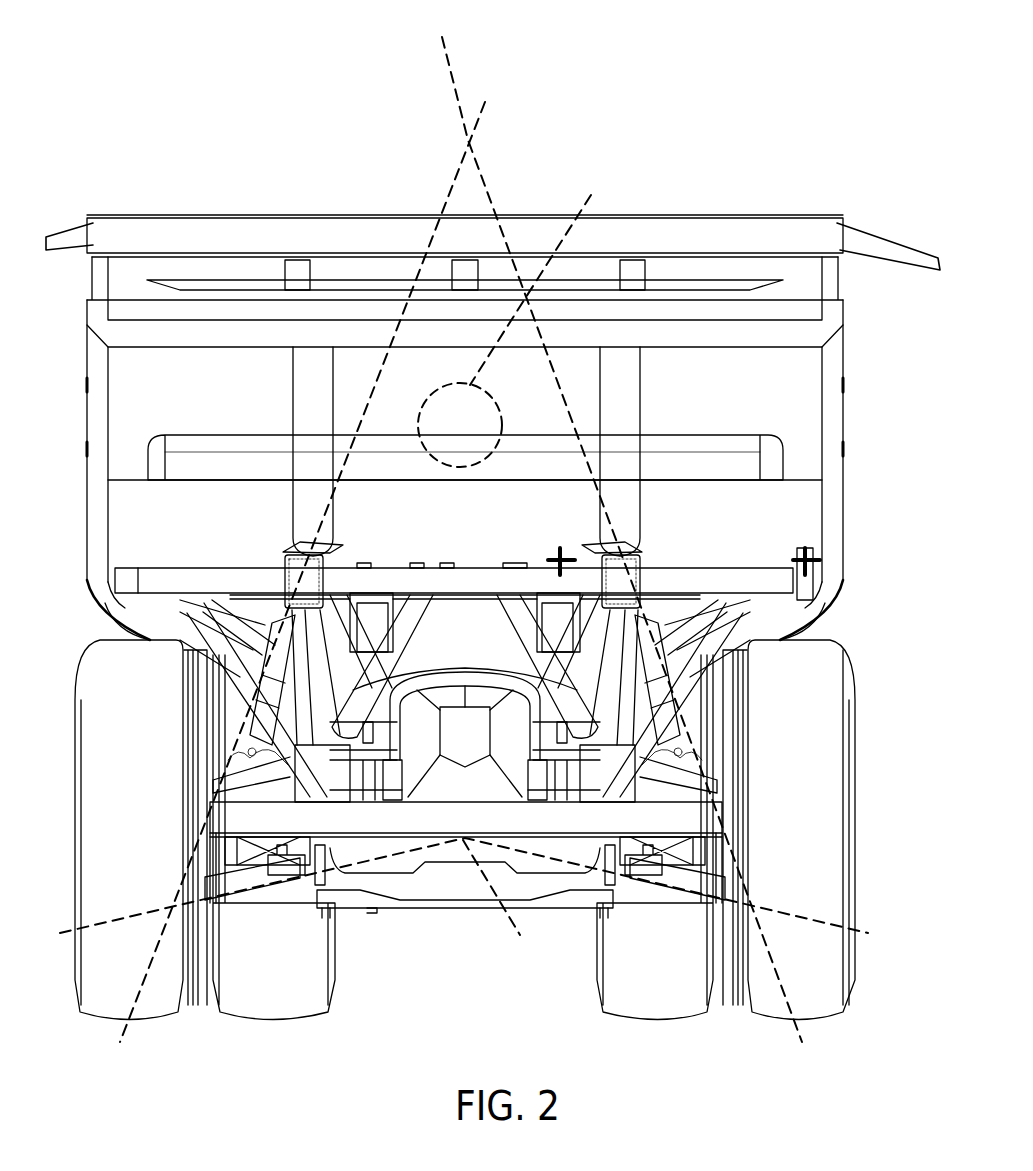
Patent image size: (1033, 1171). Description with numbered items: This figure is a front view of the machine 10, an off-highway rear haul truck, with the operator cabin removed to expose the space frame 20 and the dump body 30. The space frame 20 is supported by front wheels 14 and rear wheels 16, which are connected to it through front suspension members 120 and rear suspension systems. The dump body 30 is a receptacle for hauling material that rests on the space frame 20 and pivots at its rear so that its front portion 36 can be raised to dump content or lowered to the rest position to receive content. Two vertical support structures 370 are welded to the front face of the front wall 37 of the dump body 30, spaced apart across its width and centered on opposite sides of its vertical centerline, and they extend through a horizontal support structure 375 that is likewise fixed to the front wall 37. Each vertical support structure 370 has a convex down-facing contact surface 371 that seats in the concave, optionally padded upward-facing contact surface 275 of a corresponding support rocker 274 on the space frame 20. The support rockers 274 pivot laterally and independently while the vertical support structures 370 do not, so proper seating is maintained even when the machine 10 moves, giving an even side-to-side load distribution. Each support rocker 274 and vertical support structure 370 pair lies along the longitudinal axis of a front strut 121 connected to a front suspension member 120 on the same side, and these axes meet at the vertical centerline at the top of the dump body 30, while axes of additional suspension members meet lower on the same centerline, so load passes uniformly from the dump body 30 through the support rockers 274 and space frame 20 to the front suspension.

The machine 10 is at (480, 544).
The dump body 30 is at (492, 370).
The front portion of the dump body 36 is at (888, 296).
The front wall of the dump body 37 is at (81, 453).
The horizontal support structure 375 is at (465, 426).
The vertical support structures 370 is at (491, 451).
The down-facing contact surface 371 is at (462, 548).
The upward-facing contact surface 275 is at (466, 528).
The support rocker 274 is at (436, 600).
The front strut 121 is at (465, 689).
The front suspension member 120 is at (468, 796).
The front wheels 14 is at (468, 830).
The rear wheels 16 is at (463, 872).
The space frame 20 is at (465, 814).